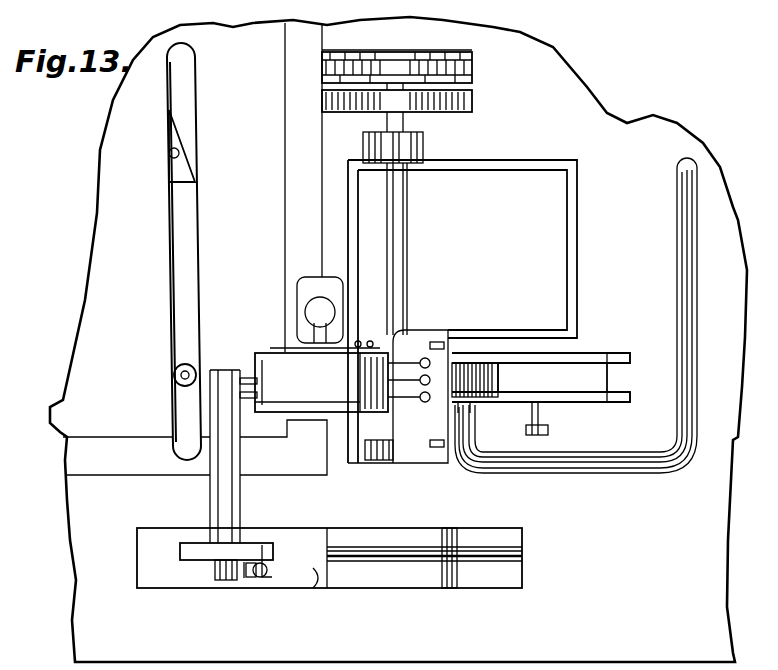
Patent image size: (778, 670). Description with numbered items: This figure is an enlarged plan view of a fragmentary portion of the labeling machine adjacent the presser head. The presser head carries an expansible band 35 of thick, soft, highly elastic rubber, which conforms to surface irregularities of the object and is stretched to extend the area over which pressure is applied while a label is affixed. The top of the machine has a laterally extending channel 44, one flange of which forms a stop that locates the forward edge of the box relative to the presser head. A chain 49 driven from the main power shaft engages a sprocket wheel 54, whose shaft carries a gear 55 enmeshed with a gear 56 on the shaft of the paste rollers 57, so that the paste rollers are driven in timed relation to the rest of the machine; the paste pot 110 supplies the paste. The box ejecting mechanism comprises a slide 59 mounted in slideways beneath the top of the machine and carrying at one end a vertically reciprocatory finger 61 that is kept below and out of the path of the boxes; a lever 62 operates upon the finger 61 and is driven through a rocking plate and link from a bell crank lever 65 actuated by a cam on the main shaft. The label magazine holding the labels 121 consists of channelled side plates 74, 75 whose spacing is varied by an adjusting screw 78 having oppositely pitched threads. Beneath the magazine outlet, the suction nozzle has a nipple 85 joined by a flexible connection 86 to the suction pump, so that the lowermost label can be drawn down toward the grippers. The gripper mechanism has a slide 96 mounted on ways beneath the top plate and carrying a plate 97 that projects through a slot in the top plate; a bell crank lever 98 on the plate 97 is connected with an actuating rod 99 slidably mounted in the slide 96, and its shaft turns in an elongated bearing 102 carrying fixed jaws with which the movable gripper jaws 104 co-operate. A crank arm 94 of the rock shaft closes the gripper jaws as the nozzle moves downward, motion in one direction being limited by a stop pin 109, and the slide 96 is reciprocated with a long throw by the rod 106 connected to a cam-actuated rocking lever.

The expansible band 35 is at (321, 382).
The laterally extending channel 44 is at (285, 86).
The chain 49 is at (424, 52).
The sprocket wheel 54 is at (472, 66).
The gear 55 is at (472, 99).
The gear 56 is at (420, 108).
The paste rollers 57 is at (415, 395).
The slide 59 is at (182, 226).
The vertically reciprocatory finger 61 is at (176, 377).
The lever 62 is at (180, 363).
The bell crank lever 65 is at (183, 170).
The channelled side plate 74 is at (603, 353).
The channelled side plate 75 is at (600, 403).
The adjusting screw 78 is at (548, 429).
The nipple 85 is at (476, 410).
The flexible connection 86 is at (575, 492).
The crank arm 94 is at (452, 582).
The slide 96 is at (318, 570).
The plate 97 is at (180, 553).
The bell crank lever 98 is at (222, 581).
The actuating rod 99 is at (272, 578).
The elongated bearing 102 is at (216, 511).
The movable gripper jaws 104 is at (251, 391).
The rod 106 is at (410, 560).
The stop pin 109 is at (250, 580).
The paste pot 110 is at (383, 463).
The labels 121 is at (472, 366).